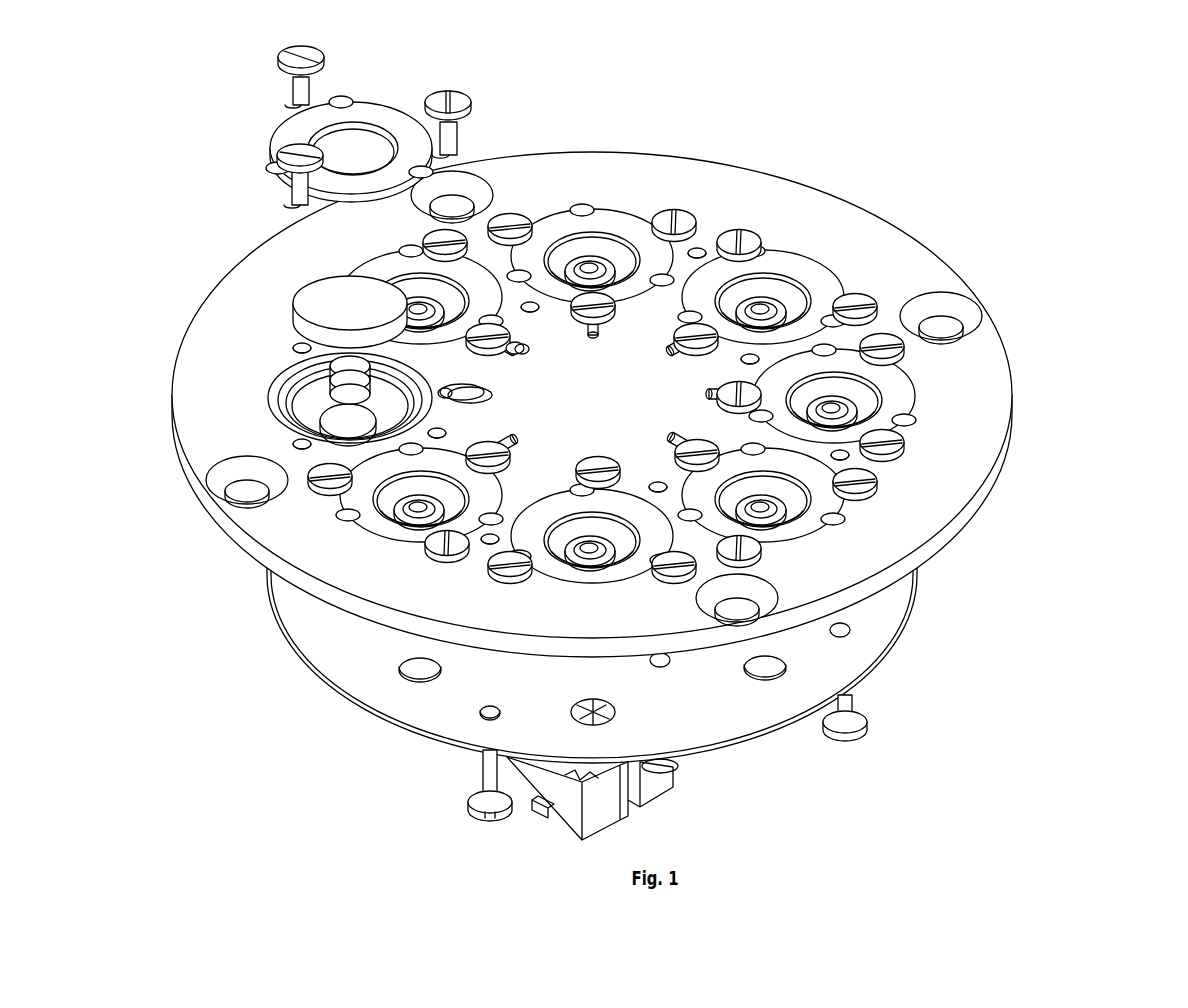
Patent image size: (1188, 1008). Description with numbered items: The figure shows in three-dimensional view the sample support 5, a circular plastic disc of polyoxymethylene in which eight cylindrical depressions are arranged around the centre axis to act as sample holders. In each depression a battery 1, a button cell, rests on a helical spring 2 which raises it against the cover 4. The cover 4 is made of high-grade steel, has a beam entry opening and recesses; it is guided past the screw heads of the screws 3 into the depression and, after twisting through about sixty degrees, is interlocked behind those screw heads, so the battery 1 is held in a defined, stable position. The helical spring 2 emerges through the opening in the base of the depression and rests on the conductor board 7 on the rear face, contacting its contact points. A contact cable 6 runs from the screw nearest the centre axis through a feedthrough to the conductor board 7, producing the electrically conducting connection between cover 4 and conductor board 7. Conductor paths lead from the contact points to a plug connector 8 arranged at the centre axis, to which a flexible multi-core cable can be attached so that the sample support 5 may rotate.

The battery 1 is at (283, 303).
The helical spring 2 is at (795, 303).
The screw for cover mounting 3 is at (893, 296).
The cover 4 is at (925, 388).
The sample support 5 is at (1020, 400).
The contact cable 6 is at (523, 348).
The conductor board 7 is at (927, 572).
The plug connector 8 is at (632, 788).